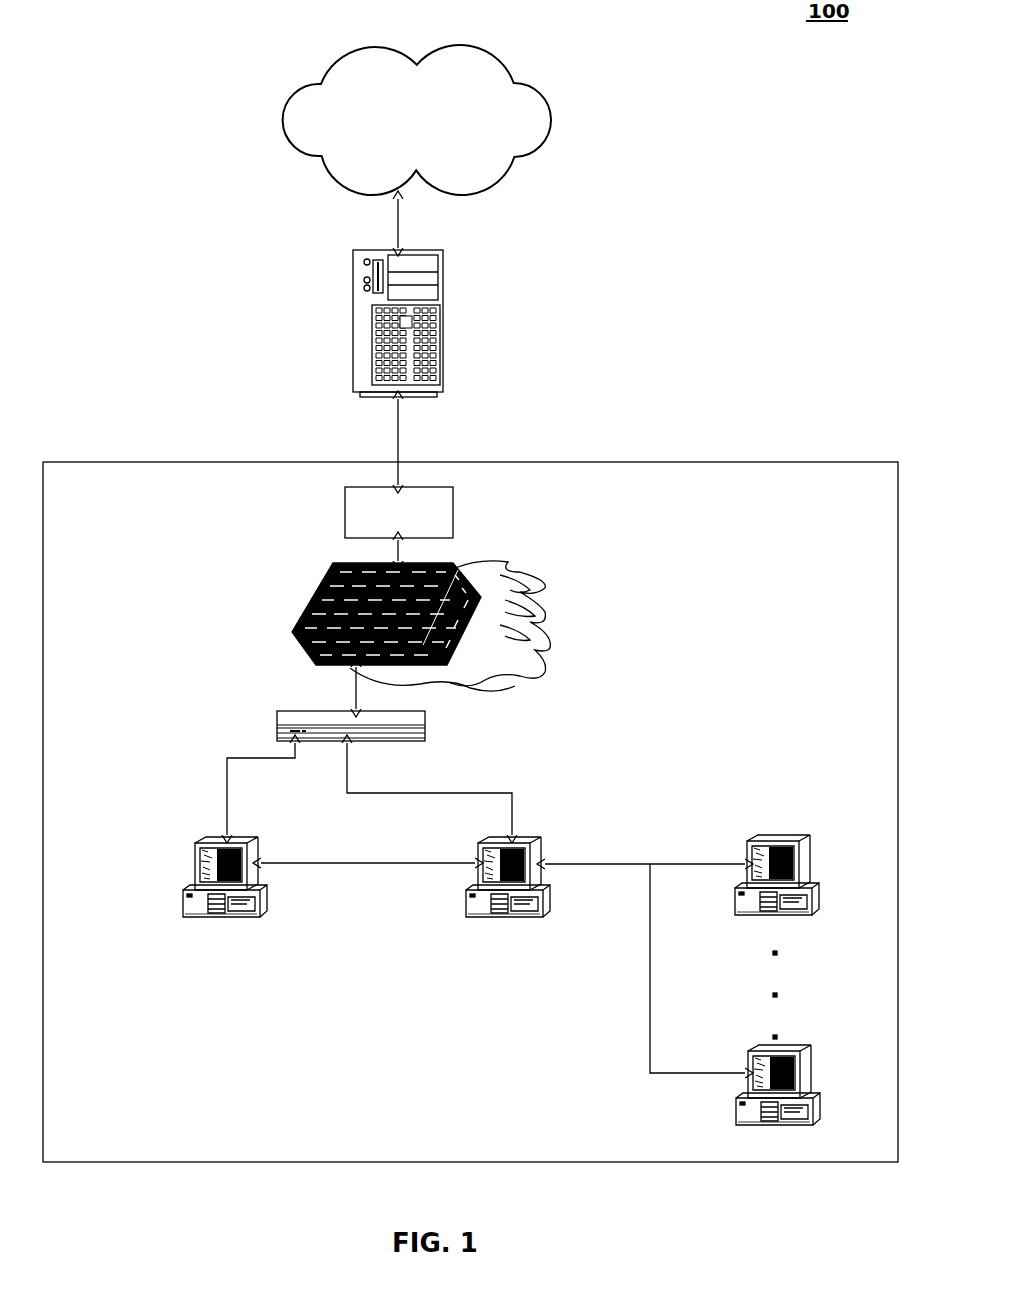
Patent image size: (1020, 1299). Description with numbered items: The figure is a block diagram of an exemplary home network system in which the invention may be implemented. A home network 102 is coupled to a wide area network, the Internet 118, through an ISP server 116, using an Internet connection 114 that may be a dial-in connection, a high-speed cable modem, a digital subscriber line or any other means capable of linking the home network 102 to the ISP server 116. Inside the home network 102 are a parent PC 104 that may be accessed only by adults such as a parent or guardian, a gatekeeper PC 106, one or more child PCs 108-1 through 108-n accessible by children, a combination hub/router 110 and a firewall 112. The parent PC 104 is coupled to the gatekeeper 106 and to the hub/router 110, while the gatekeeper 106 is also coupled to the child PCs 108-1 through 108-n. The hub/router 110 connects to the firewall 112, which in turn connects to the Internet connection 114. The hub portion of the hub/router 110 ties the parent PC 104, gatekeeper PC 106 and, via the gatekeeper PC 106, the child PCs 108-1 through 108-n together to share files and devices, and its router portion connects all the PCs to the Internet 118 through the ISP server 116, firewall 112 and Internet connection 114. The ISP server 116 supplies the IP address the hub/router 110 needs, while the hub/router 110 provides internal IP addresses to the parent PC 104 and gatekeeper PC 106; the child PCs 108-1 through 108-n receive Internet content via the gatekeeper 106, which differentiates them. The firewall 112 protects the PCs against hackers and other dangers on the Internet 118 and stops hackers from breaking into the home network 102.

The home network 102 is at (470, 812).
The parent PC 104 is at (240, 832).
The gatekeeper PC 106 is at (525, 832).
The child PC 108-1 is at (782, 830).
The child PC 108-n is at (792, 1040).
The hub/router 110 is at (420, 712).
The firewall 112 is at (455, 565).
The Internet connection 114 is at (455, 512).
The ISP server 116 is at (437, 250).
The Internet 118 is at (550, 120).